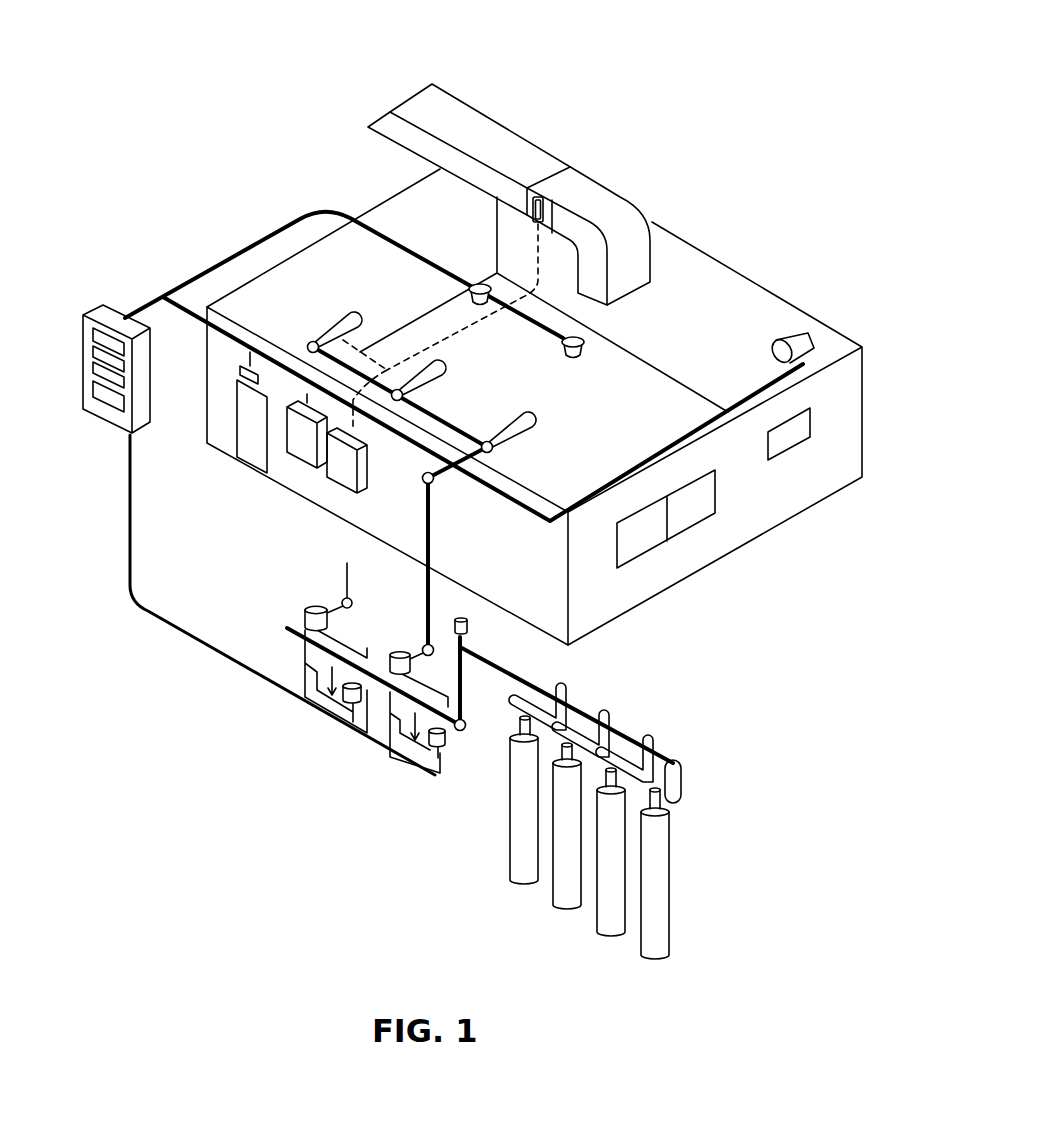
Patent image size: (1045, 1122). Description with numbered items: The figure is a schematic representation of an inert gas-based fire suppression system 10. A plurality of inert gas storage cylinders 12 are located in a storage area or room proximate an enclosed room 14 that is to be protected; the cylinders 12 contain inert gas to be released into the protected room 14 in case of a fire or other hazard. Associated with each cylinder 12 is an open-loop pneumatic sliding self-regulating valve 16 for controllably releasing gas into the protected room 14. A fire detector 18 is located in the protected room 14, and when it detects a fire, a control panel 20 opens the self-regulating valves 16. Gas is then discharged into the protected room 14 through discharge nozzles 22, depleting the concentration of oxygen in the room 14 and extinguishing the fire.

The inert gas-based fire suppression system 10 is at (677, 90).
The inert gas storage cylinders 12 is at (510, 818).
The enclosed room 14 is at (722, 287).
The open-loop pneumatic sliding self-regulating valve 16 is at (676, 770).
The fire detector 18 is at (582, 352).
The control panel 20 is at (100, 398).
The discharge nozzles 22 is at (440, 371).